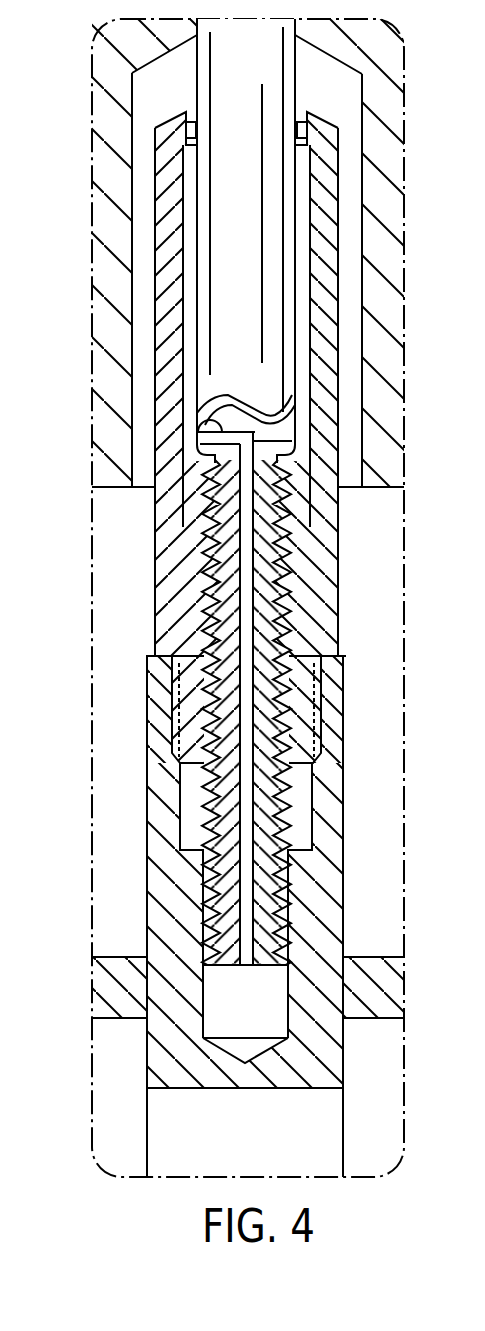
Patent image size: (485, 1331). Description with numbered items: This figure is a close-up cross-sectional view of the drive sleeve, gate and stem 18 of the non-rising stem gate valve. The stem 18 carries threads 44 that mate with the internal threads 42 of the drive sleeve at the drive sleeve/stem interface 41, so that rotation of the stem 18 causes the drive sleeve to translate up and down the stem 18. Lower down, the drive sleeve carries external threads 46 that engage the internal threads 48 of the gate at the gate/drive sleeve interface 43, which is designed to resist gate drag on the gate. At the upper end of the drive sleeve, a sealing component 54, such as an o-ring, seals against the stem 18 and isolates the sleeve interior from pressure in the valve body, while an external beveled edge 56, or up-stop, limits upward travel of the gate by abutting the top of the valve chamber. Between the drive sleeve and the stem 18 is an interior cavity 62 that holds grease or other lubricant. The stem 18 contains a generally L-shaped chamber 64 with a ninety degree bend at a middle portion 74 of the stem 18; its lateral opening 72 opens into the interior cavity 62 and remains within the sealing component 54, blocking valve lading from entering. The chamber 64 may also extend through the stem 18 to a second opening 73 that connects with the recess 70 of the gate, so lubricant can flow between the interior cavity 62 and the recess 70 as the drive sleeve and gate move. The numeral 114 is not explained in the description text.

The stem 18 is at (223, 335).
The sealing component 54 is at (186, 124).
The external beveled edge 56 is at (308, 122).
The lateral opening 72 is at (202, 413).
The middle portion 74 is at (266, 441).
The interior cavity 62 is at (196, 478).
The threads 44 is at (292, 503).
The chamber 64 is at (243, 517).
The drive sleeve/stem interface 41 is at (287, 577).
The internal threads 42 is at (268, 612).
The internal threads 48 is at (174, 690).
The gate/drive sleeve interface 43 is at (322, 727).
The external threads 46 is at (160, 790).
The housing part 114 is at (484, 802).
The second opening 73 is at (245, 968).
The recess 70 is at (253, 1012).